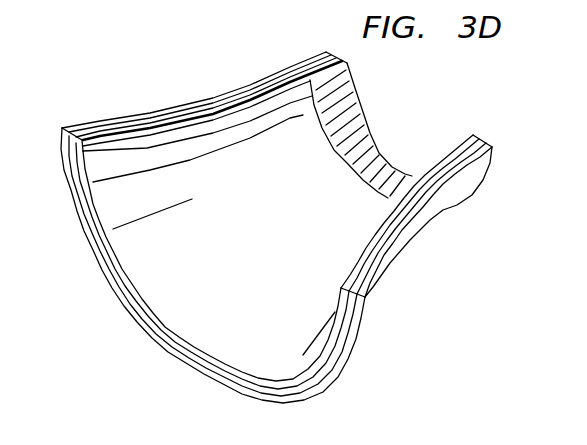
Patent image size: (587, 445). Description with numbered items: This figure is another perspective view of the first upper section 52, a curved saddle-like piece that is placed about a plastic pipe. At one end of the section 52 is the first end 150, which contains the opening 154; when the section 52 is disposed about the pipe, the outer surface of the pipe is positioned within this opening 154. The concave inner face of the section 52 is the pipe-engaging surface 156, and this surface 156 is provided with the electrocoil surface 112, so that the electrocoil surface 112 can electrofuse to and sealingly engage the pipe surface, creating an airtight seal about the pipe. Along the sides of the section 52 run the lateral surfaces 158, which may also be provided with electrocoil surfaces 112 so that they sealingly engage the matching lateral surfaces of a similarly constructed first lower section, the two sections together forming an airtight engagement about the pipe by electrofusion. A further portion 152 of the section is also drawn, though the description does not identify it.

The first upper section 52 is at (447, 207).
The electrocoil surface 112 is at (213, 107).
The first end 150 is at (364, 116).
The lens blank edge 152 is at (158, 328).
The opening 154 is at (442, 98).
The pipe-engaging surface 156 is at (385, 157).
The lateral surfaces 158 is at (312, 65).